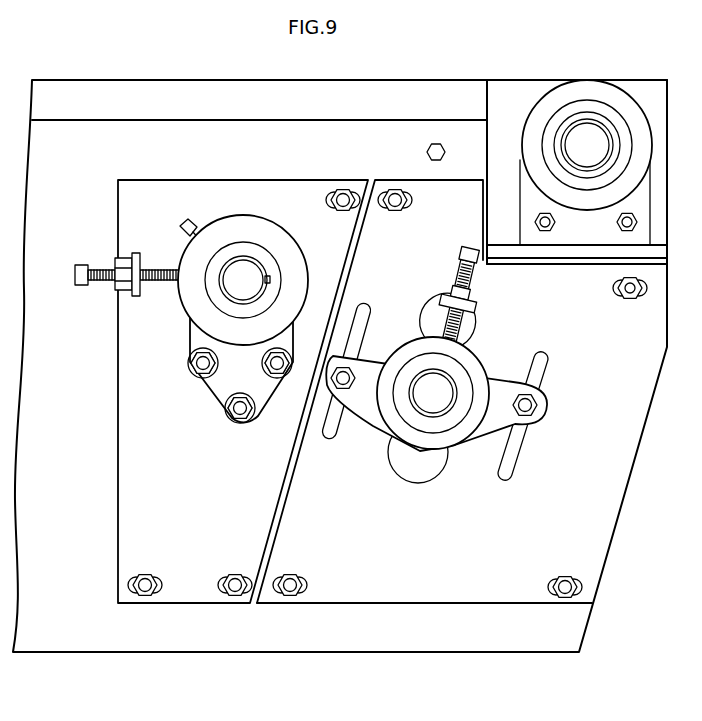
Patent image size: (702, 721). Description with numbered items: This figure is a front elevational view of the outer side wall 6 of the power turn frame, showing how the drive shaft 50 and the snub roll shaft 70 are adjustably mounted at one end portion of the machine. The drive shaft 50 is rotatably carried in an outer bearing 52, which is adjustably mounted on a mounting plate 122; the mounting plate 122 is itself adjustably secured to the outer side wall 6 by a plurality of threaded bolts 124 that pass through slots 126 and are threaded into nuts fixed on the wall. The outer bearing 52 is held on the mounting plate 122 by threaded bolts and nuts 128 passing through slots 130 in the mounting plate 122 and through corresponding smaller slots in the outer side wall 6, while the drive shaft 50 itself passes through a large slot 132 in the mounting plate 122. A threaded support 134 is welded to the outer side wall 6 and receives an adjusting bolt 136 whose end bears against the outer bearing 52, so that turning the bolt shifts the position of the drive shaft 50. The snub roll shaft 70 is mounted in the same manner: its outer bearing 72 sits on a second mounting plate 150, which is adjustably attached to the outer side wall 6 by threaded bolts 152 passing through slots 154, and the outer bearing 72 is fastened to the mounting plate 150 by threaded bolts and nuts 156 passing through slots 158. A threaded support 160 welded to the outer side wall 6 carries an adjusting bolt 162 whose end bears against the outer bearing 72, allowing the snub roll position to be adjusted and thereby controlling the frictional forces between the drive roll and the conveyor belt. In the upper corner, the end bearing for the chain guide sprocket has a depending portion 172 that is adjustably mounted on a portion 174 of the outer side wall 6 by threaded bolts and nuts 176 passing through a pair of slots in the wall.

The outer side wall 6 is at (68, 572).
The drive shaft 50 is at (427, 400).
The outer bearing 52 is at (458, 438).
The snub roll shaft 70 is at (252, 267).
The outer bearing 72 is at (237, 226).
The mounting plate 122 is at (434, 562).
The threaded bolts 124 is at (396, 209).
The slots 126 is at (384, 190).
The threaded bolts and nuts 128 is at (538, 405).
The slots 130 is at (366, 303).
The large slot 132 is at (399, 472).
The threaded support 134 is at (480, 315).
The adjusting bolt 136 is at (474, 278).
The mounting plate 150 is at (216, 550).
The threaded bolts 152 is at (346, 196).
The slots 154 is at (333, 200).
The threaded bolts and nuts 156 is at (189, 370).
The slots 158 is at (298, 358).
The threaded support 160 is at (136, 252).
The adjusting bolt 162 is at (103, 284).
The depending portion 172 is at (596, 245).
The portion of the outer side wall 174 is at (525, 110).
The threaded bolts and nuts 176 is at (622, 233).